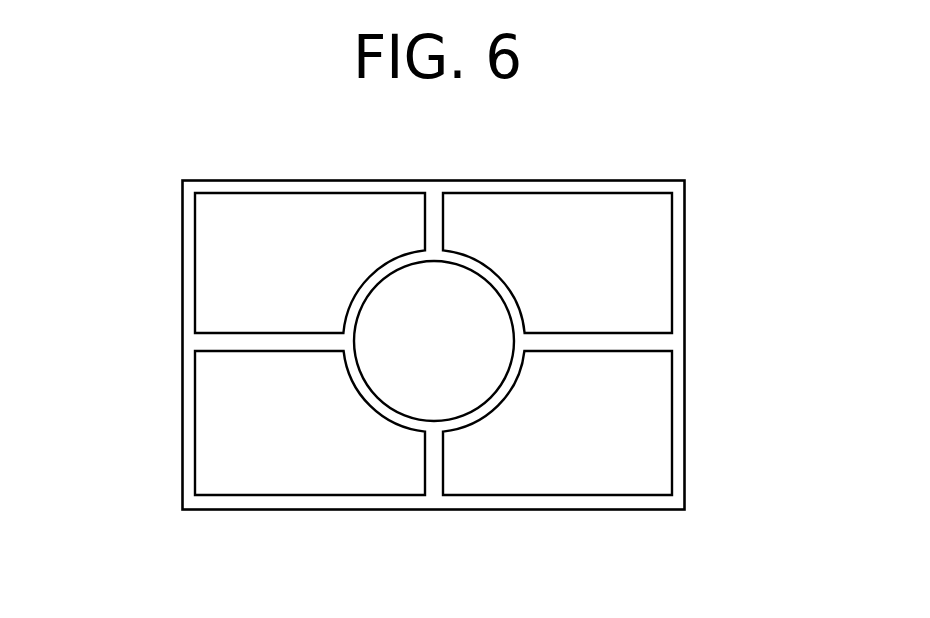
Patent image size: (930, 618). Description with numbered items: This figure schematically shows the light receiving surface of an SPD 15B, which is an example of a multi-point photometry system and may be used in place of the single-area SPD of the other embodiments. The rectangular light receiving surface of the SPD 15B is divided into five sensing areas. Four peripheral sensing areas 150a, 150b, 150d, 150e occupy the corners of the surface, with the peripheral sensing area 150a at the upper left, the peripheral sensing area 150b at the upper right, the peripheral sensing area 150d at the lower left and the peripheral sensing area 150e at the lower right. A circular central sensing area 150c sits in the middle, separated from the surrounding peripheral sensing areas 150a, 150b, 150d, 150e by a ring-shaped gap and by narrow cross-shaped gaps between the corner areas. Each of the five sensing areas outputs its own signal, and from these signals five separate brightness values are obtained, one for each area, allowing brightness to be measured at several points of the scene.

The SPD 15B is at (685, 265).
The peripheral sensing area 150a is at (230, 257).
The peripheral sensing area 150b is at (588, 235).
The central sensing area 150c is at (458, 380).
The peripheral sensing area 150d is at (210, 443).
The peripheral sensing area 150e is at (660, 463).